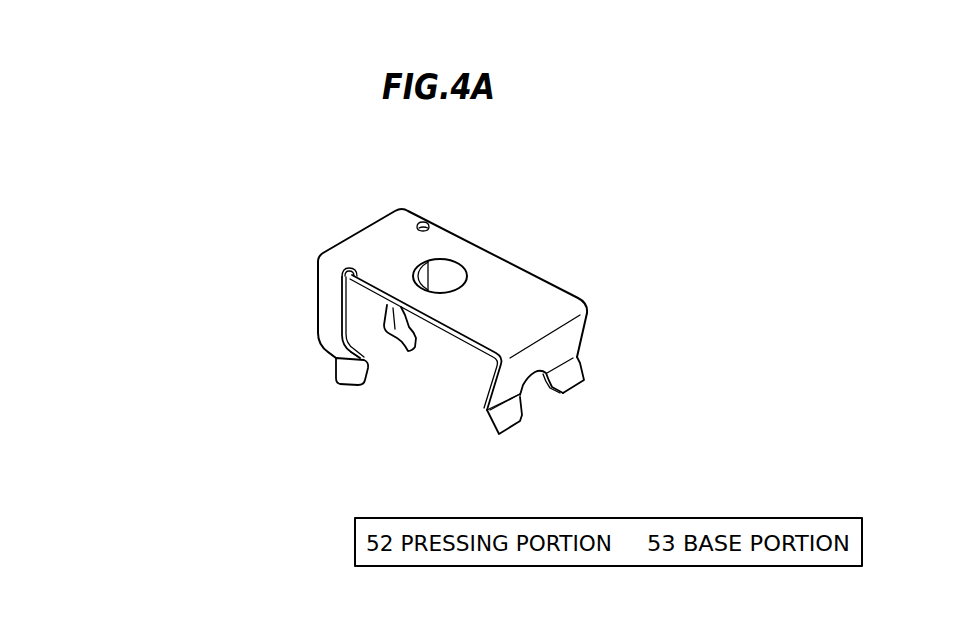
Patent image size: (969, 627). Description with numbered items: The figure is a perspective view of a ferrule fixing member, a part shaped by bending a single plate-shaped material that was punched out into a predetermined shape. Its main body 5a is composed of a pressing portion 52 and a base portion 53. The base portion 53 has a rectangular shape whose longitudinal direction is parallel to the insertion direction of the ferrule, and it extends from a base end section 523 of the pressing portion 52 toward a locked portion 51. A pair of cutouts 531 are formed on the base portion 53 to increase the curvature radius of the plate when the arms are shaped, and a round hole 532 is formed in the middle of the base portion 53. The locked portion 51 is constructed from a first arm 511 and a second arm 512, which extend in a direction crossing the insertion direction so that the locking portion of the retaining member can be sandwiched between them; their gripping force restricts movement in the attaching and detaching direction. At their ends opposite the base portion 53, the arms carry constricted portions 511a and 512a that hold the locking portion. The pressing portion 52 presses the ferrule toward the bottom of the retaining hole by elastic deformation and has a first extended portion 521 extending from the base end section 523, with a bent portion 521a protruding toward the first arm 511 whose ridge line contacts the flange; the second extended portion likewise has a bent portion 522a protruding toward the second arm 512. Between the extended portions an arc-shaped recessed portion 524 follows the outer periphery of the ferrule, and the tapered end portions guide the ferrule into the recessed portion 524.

The main body 5a is at (572, 309).
The base portion 53 is at (537, 288).
The pressing portion 52 is at (575, 335).
The cutout 531 is at (430, 226).
The round hole 532 is at (463, 262).
The locked portion 51 is at (283, 323).
The first arm 511 is at (330, 308).
The second arm 512 is at (340, 348).
The constricted portion 511a is at (338, 357).
The constricted portion 512a is at (400, 337).
The base end section 523 is at (507, 375).
The first extended portion 521 is at (510, 432).
The bent portion 521a is at (488, 410).
The bent portion 522a is at (584, 378).
The recessed portion 524 is at (533, 384).